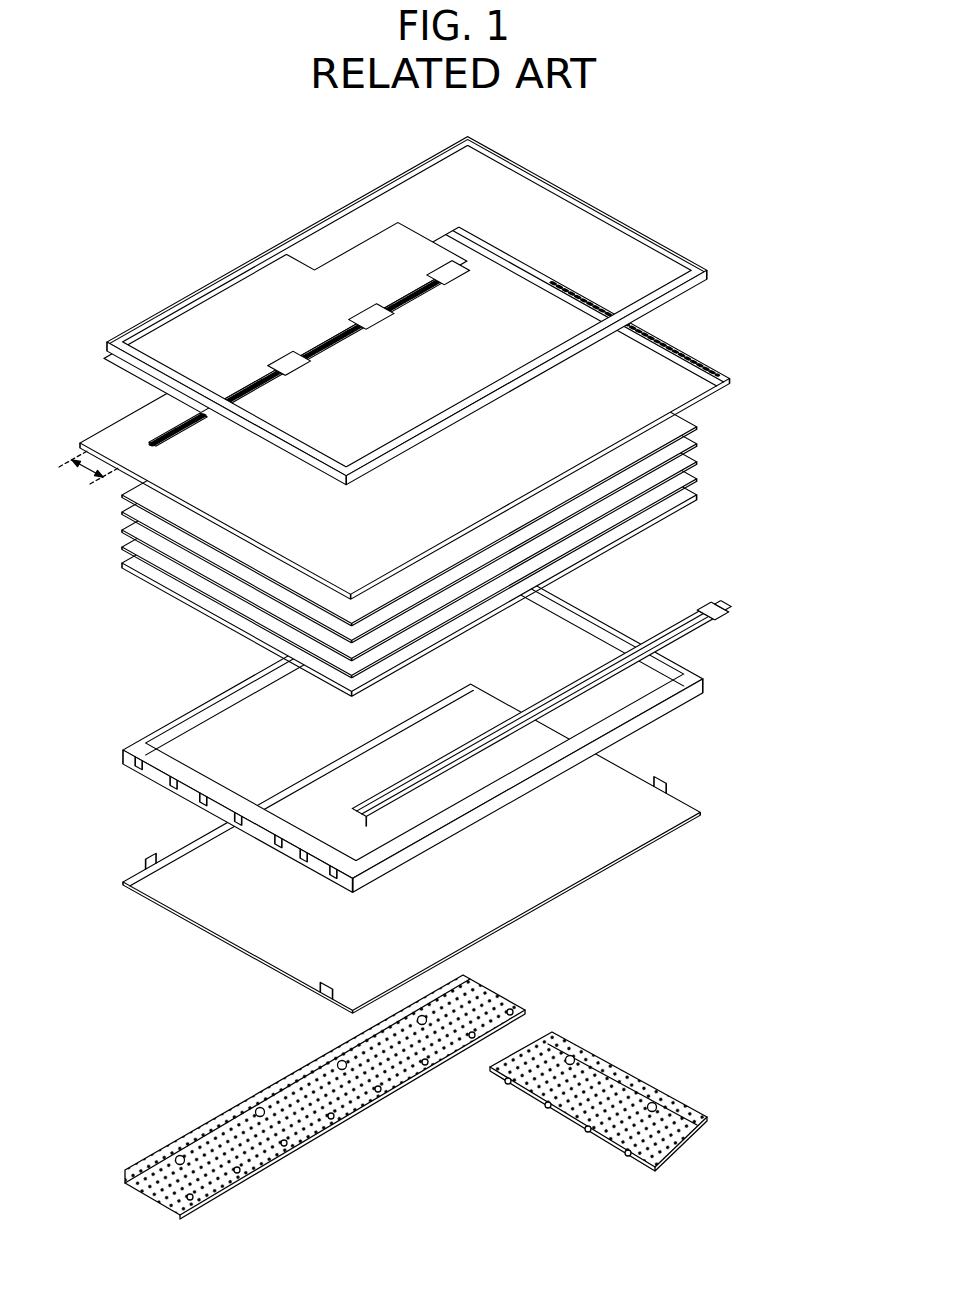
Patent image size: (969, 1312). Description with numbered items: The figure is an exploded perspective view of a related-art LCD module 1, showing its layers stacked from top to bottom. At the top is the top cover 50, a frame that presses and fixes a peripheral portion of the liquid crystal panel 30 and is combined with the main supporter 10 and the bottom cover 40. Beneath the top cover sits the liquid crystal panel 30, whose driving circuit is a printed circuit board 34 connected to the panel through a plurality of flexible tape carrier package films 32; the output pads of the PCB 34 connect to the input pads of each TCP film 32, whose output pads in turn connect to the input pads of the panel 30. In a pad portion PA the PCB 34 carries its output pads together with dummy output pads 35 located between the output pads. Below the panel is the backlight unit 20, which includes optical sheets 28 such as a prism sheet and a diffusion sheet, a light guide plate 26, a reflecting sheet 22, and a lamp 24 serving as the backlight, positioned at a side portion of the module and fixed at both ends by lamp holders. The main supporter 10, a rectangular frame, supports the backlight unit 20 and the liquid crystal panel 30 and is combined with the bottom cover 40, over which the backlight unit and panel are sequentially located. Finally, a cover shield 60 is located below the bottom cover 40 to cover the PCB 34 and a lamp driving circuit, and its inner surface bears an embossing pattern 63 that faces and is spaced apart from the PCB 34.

The LCD module 1 is at (451, 658).
The main supporter 10 is at (705, 683).
The backlight unit 20 is at (477, 595).
The reflecting sheet 22 is at (690, 497).
The lamp 24 is at (692, 647).
The light guide plate 26 is at (689, 476).
The optical sheets 28 is at (435, 479).
The liquid crystal panel 30 is at (652, 392).
The tape carrier package film 32 is at (464, 262).
The printed circuit board 34 is at (418, 242).
The dummy output pads 35 is at (160, 421).
The bottom cover 40 is at (655, 790).
The top cover 50 is at (666, 197).
The cover shield 60 is at (676, 1097).
The embossing pattern 63 is at (252, 1111).
The pad portion PA is at (89, 475).